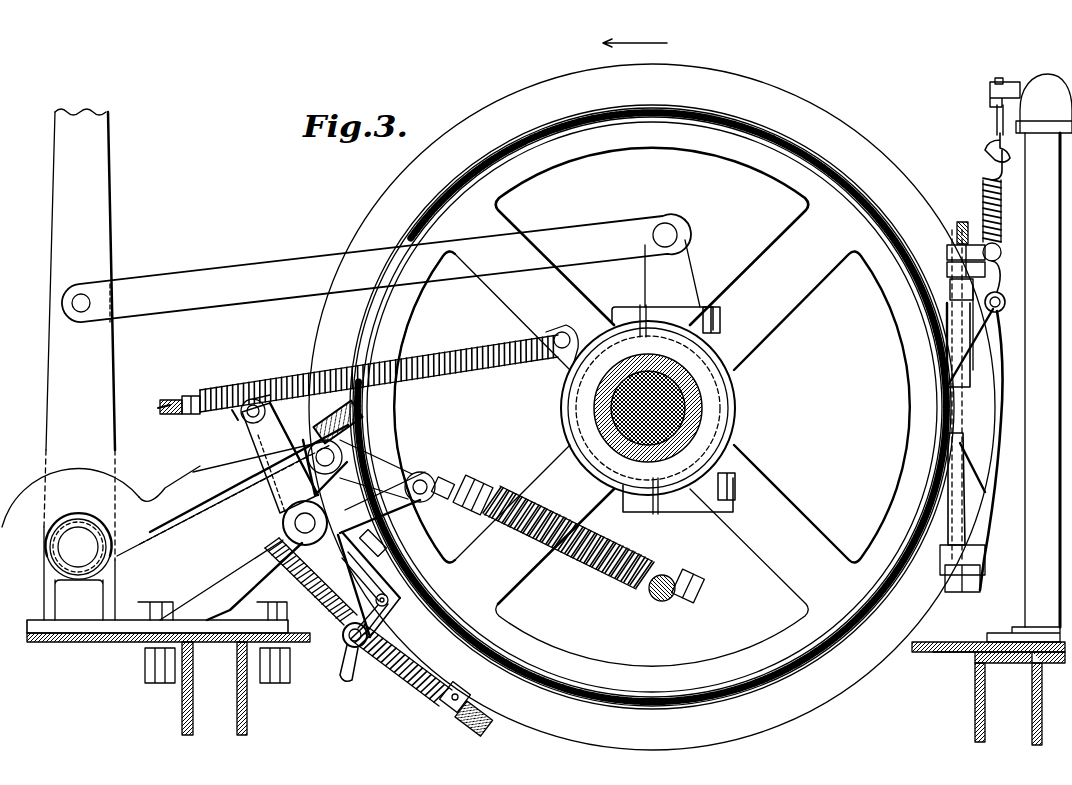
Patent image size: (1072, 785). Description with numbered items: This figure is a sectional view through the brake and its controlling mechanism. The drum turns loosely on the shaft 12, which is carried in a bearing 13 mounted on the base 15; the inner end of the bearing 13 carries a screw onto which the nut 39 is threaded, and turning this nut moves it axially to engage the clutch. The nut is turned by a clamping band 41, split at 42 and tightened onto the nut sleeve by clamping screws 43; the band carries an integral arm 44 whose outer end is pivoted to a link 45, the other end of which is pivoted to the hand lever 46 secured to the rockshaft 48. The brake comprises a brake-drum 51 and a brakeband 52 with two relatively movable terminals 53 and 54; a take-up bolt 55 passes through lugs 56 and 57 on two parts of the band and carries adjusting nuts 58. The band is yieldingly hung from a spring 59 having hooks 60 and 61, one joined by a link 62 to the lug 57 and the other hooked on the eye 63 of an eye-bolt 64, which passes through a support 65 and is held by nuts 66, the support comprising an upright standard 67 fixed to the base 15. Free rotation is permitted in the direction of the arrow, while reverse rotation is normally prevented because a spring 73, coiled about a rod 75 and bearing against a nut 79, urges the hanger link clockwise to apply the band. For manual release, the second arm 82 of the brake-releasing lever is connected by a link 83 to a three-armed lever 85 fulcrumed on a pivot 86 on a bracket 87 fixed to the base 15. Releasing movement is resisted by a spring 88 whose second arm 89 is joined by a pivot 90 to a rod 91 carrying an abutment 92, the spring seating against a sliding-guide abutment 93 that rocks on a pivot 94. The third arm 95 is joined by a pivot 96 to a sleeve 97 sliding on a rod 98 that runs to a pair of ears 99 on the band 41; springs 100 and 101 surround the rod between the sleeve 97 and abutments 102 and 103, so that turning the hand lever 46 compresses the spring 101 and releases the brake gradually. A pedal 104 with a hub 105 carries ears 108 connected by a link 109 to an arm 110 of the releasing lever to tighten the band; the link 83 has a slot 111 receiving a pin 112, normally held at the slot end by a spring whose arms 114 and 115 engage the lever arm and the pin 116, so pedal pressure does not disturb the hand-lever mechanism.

The shaft 12 is at (700, 415).
The bearing 13 is at (700, 394).
The base 15 is at (232, 638).
The nut 39 is at (712, 428).
The clamping band 41 is at (698, 304).
The split 42 is at (640, 312).
The clamping screws 43 is at (720, 318).
The arm 44 is at (688, 276).
The link 45 is at (300, 262).
The hand lever 46 is at (112, 356).
The rockshaft 48 is at (78, 568).
The brake-drum 51 is at (842, 186).
The brakeband 52 is at (870, 212).
The terminal 53 is at (342, 456).
The terminal 54 is at (350, 488).
The bolt 55 is at (964, 398).
The lug 56 is at (982, 522).
The lug 57 is at (984, 332).
The adjusting nuts 58 is at (978, 265).
The spring 59 is at (982, 202).
The hook 60 is at (985, 233).
The hook 61 is at (992, 168).
The link 62 is at (1006, 251).
The eye 63 is at (988, 148).
The eye-bolt 64 is at (995, 123).
The support 65 is at (1003, 80).
The nut 66 is at (995, 86).
The upright standard 67 is at (1024, 351).
The spring 73 is at (432, 700).
The rod 75 is at (466, 728).
The nut 79 is at (466, 694).
The second arm 82 is at (390, 580).
The link 83 is at (384, 624).
The three-armed lever 85 is at (385, 570).
The pivot 86 is at (300, 522).
The bracket 87 is at (205, 575).
The spring 88 is at (650, 545).
The second arm 89 is at (400, 512).
The pivot 90 is at (424, 484).
The rod 91 is at (470, 500).
The abutment 92 is at (495, 500).
The abutment 93 is at (674, 568).
The pivot 94 is at (694, 578).
The third arm 95 is at (269, 411).
The pivot 96 is at (234, 420).
The sleeve 97 is at (258, 398).
The rod 98 is at (172, 422).
The ears 99 is at (558, 355).
The spring 100 is at (446, 352).
The spring 101 is at (208, 394).
The abutment 102 is at (556, 330).
The abutment 103 is at (178, 398).
The pedal 104 is at (350, 426).
The hub 105 is at (80, 520).
The ears 108 is at (213, 515).
The link 109 is at (222, 518).
The arm 110 is at (280, 458).
The slot 111 is at (350, 660).
The pin 112 is at (368, 636).
The arm 114 is at (311, 581).
The arm 115 is at (363, 576).
The pin 116 is at (388, 606).